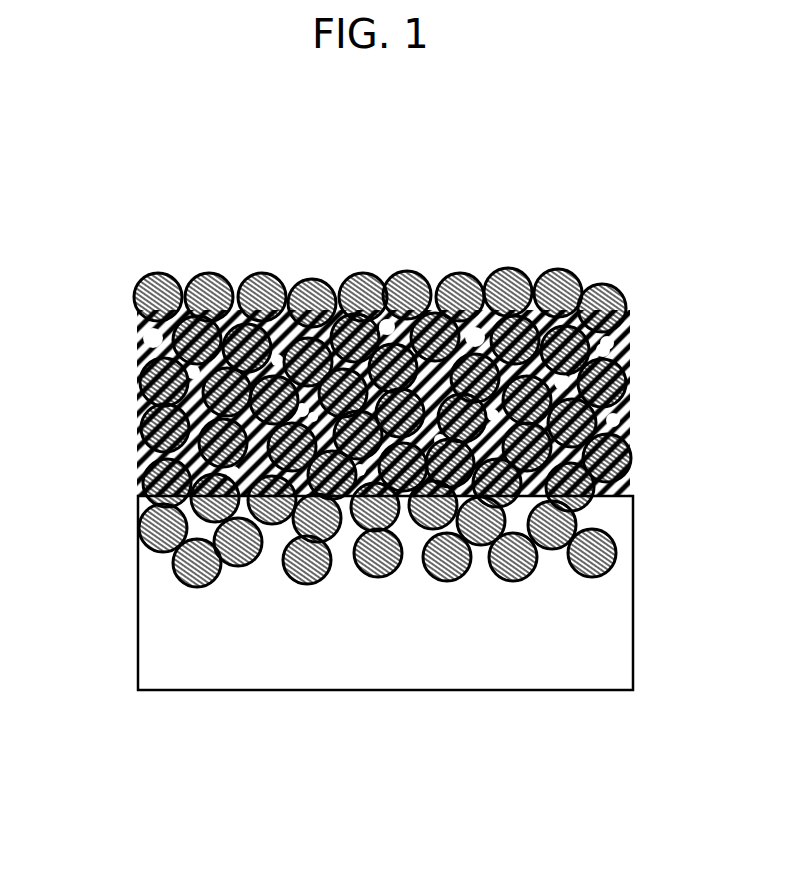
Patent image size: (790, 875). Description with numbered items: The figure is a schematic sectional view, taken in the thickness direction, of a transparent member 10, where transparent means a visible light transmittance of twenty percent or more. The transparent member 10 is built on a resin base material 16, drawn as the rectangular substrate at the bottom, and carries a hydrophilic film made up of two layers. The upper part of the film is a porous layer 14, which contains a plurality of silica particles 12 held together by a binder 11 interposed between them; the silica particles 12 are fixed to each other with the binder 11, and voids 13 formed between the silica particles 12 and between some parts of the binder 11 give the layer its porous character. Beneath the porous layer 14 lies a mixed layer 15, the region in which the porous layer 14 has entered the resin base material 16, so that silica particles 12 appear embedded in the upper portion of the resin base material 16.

The transparent member 10 is at (435, 232).
The binder 11 is at (627, 358).
The silica particles 12 is at (510, 270).
The voids 13 is at (613, 423).
The porous layer 14 is at (117, 280).
The mixed layer 15 is at (117, 503).
The resin base material 16 is at (622, 630).